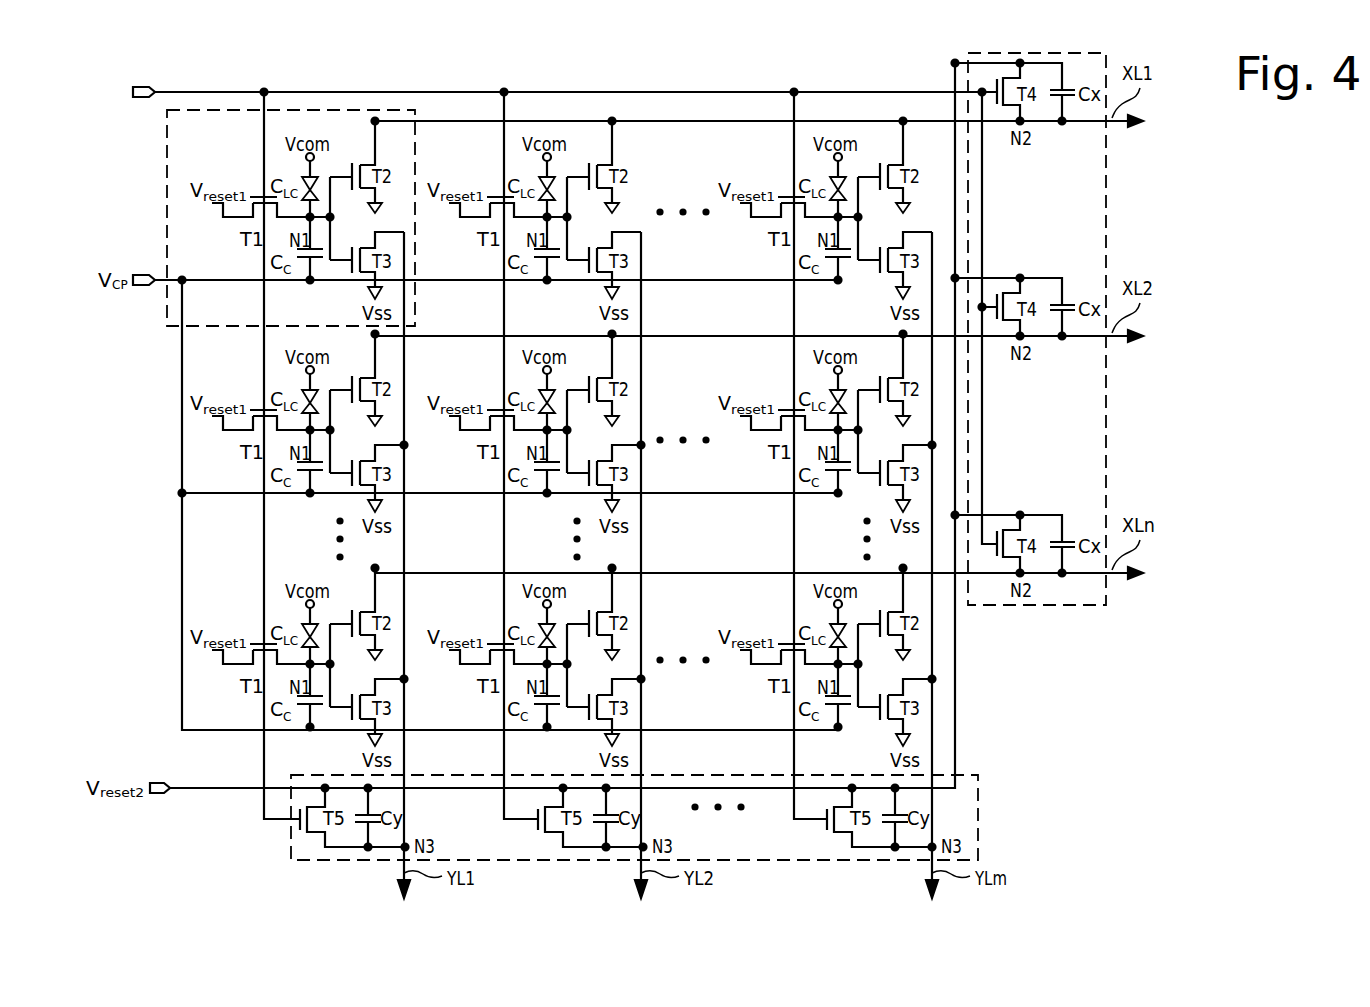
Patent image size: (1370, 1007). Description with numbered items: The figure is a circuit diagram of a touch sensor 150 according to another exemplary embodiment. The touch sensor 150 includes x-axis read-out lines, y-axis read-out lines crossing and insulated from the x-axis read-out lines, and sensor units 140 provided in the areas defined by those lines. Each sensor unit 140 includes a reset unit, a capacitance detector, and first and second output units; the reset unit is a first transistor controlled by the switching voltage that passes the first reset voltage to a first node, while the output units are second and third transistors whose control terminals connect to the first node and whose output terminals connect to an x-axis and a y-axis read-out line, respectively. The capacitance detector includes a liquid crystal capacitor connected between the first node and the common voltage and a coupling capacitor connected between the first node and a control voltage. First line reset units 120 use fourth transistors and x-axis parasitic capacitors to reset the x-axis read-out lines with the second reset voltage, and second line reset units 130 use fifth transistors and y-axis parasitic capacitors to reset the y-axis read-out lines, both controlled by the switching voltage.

The touch sensor 150 is at (742, 69).
The sensor unit 140 is at (167, 188).
The first line reset unit 120 is at (1107, 195).
The second line reset unit 130 is at (978, 818).